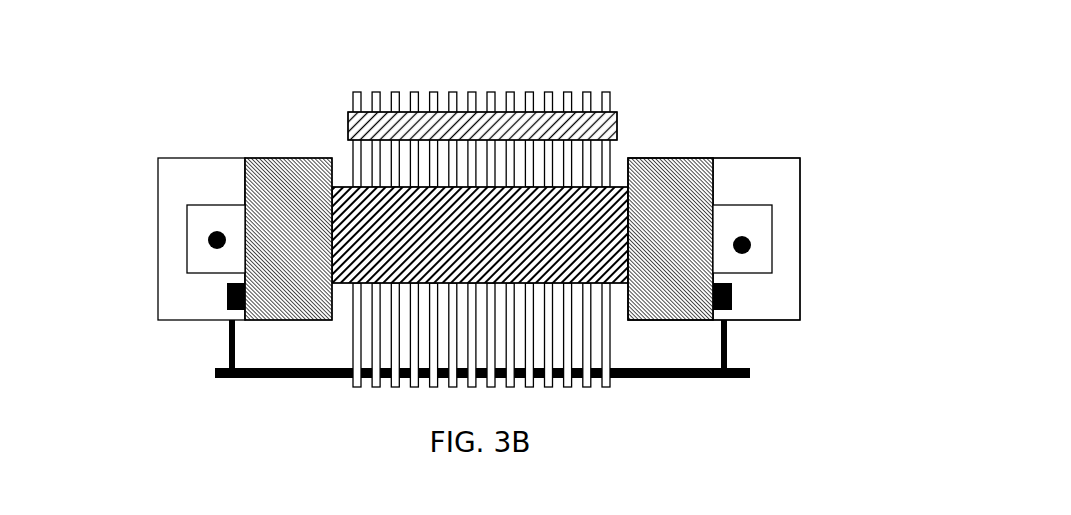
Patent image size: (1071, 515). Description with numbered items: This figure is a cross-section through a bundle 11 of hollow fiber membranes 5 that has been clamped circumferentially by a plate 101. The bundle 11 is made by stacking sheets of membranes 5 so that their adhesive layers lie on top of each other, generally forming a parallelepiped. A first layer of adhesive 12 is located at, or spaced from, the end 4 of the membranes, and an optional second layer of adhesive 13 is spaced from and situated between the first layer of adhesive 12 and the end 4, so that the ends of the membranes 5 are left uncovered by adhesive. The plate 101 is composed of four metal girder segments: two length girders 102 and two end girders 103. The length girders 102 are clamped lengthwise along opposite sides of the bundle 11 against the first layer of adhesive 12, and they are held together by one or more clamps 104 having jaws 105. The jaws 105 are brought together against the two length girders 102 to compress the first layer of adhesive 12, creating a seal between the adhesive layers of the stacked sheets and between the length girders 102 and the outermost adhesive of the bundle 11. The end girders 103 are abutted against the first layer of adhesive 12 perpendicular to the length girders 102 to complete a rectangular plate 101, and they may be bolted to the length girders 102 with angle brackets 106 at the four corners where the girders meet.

The end of the sheet 4 is at (568, 97).
The membranes 5 is at (395, 105).
The bundle 11 is at (431, 72).
The first layer of adhesive 12 is at (602, 283).
The second layer of adhesive 13 is at (620, 111).
The plate 101 is at (694, 152).
The length girders 102 is at (280, 272).
The end girders 103 is at (170, 163).
The clamps 104 is at (736, 348).
The jaws 105 is at (225, 290).
The angle brackets 106 is at (205, 215).